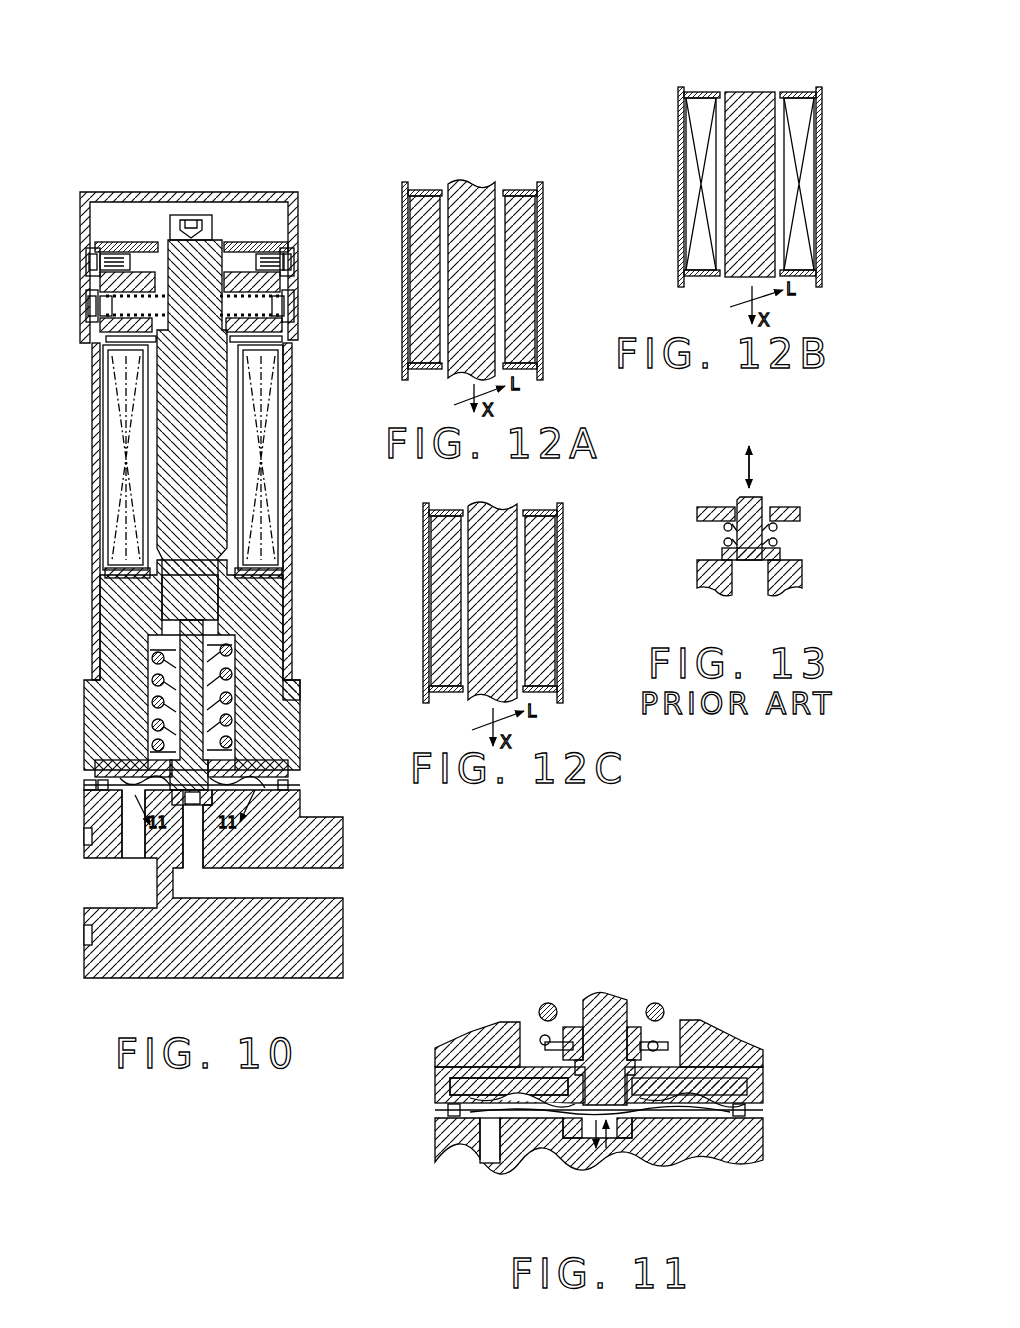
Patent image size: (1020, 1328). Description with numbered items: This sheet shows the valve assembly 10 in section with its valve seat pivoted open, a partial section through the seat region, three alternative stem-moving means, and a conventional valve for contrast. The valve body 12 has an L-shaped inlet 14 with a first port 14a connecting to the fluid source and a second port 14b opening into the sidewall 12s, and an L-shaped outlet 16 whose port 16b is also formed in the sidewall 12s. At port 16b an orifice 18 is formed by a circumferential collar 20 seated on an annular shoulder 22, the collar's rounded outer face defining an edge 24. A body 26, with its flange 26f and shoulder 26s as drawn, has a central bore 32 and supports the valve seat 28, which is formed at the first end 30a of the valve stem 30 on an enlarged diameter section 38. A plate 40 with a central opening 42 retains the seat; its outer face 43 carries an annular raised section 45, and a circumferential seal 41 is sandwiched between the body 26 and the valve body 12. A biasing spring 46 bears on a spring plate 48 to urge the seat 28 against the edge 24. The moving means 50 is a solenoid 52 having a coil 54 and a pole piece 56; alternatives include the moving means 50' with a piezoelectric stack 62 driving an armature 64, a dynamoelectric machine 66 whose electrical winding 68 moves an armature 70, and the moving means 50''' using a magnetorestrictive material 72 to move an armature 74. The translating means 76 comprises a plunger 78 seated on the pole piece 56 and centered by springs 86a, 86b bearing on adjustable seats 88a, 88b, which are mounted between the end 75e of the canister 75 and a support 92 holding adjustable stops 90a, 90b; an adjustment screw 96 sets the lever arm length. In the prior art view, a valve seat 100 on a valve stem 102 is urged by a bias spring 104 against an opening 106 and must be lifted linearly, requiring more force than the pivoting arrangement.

In FIG. 10, the valve assembly 10 is at (350, 786).
In FIG. 11, the valve body 12 is at (765, 1148).
In FIG. 10, the sidewall 12s is at (290, 771).
In FIG. 11, the sidewall 12s is at (720, 1120).
In FIG. 10, the inlet 14 is at (127, 902).
In FIG. 10, the first port 14a is at (84, 876).
In FIG. 10, the second port 14b is at (134, 800).
In FIG. 11, the second port 14b is at (493, 1130).
In FIG. 10, the outlet 16 is at (310, 892).
In FIG. 11, the port 16b is at (580, 1150).
In FIG. 10, the orifice 18 is at (193, 820).
In FIG. 11, the orifice 18 is at (601, 1150).
In FIG. 10, the circumferential collar 20 is at (260, 830).
In FIG. 10, the annular shoulder 22 is at (215, 808).
In FIG. 11, the annular shoulder 22 is at (622, 1140).
In FIG. 10, the edge 24 is at (95, 766).
In FIG. 11, the edge 24 is at (672, 1130).
In FIG. 10, the body 26 is at (302, 722).
In FIG. 11, the body 26 is at (452, 1040).
In FIG. 10, the housing flange 26f is at (250, 568).
In FIG. 10, the housing shoulder 26s is at (293, 692).
In FIG. 10, the valve seat 28 is at (240, 788).
In FIG. 11, the valve seat 28 is at (720, 1095).
In FIG. 10, the valve stem 30 is at (210, 690).
In FIG. 11, the valve stem 30 is at (610, 998).
In FIG. 11, the first end 30a is at (568, 1030).
In FIG. 10, the central bore 32 is at (230, 655).
In FIG. 11, the central bore 32 is at (525, 1025).
In FIG. 11, the enlarged diameter section 38 is at (660, 1040).
In FIG. 11, the plate 40 is at (735, 1060).
In FIG. 11, the circumferential seal 41 is at (766, 1108).
In FIG. 11, the central opening 42 is at (470, 1070).
In FIG. 11, the outer face 43 is at (445, 1112).
In FIG. 11, the annular raised section 45 is at (722, 1060).
In FIG. 11, the biasing spring 46 is at (545, 1000).
In FIG. 11, the spring plate 48 is at (648, 1003).
In FIG. 10, the moving means 50 is at (335, 416).
In FIG. 12A, the moving means 50' is at (427, 147).
In FIG. 12C, the moving means 50''' is at (387, 592).
In FIG. 10, the solenoid 52 is at (268, 456).
In FIG. 10, the coil 54 is at (262, 390).
In FIG. 10, the pole piece 56 is at (236, 413).
In FIG. 12A, the piezoelectric stack 62 is at (428, 300).
In FIG. 12A, the armature 64 is at (486, 182).
In FIG. 12B, the dynamoelectric machine 66 is at (740, 283).
In FIG. 12B, the electrical winding 68 is at (690, 185).
In FIG. 12B, the armature 70 is at (758, 92).
In FIG. 12C, the magnetorestrictive material 72 is at (445, 620).
In FIG. 12C, the armature 74 is at (487, 504).
In FIG. 10, the canister 75 is at (300, 526).
In FIG. 10, the end 75e is at (252, 338).
In FIG. 10, the means for translating movement 76 is at (268, 206).
In FIG. 10, the plunger 78 is at (220, 240).
In FIG. 10, the spring 86a is at (280, 282).
In FIG. 10, the spring 86b is at (128, 300).
In FIG. 10, the seat 88a is at (290, 312).
In FIG. 10, the seat 88b is at (88, 307).
In FIG. 10, the stop 90a is at (268, 250).
In FIG. 10, the stop 90b is at (162, 245).
In FIG. 10, the support 92 is at (110, 230).
In FIG. 10, the adjustment screw 96 is at (180, 215).
In FIG. 13, the valve seat 100 is at (780, 550).
In FIG. 13, the valve stem 102 is at (758, 497).
In FIG. 13, the bias spring 104 is at (722, 542).
In FIG. 13, the opening 106 is at (751, 562).